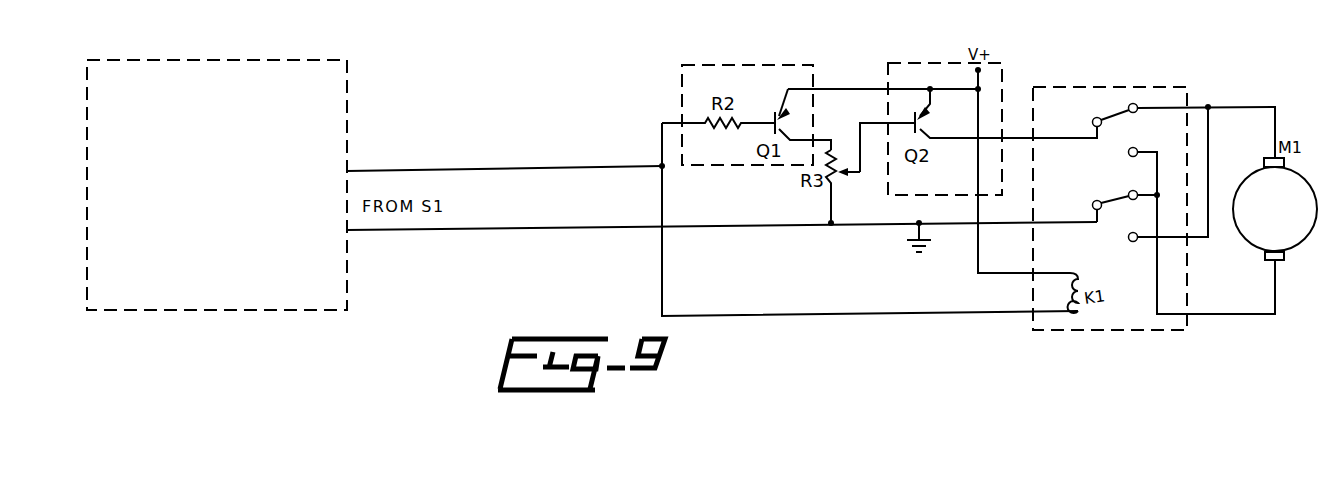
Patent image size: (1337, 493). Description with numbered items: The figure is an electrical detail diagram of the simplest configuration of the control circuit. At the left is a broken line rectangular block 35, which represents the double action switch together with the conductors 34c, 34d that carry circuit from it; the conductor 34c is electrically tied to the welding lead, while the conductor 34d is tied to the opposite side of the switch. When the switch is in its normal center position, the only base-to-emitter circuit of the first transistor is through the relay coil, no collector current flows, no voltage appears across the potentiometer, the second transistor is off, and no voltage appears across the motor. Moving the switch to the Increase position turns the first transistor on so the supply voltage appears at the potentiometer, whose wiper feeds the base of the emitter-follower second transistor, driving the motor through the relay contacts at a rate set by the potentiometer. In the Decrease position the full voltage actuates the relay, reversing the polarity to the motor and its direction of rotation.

The broken line rectangular block 35 is at (191, 58).
The conductor 34d is at (513, 167).
The conductor 34c is at (517, 230).